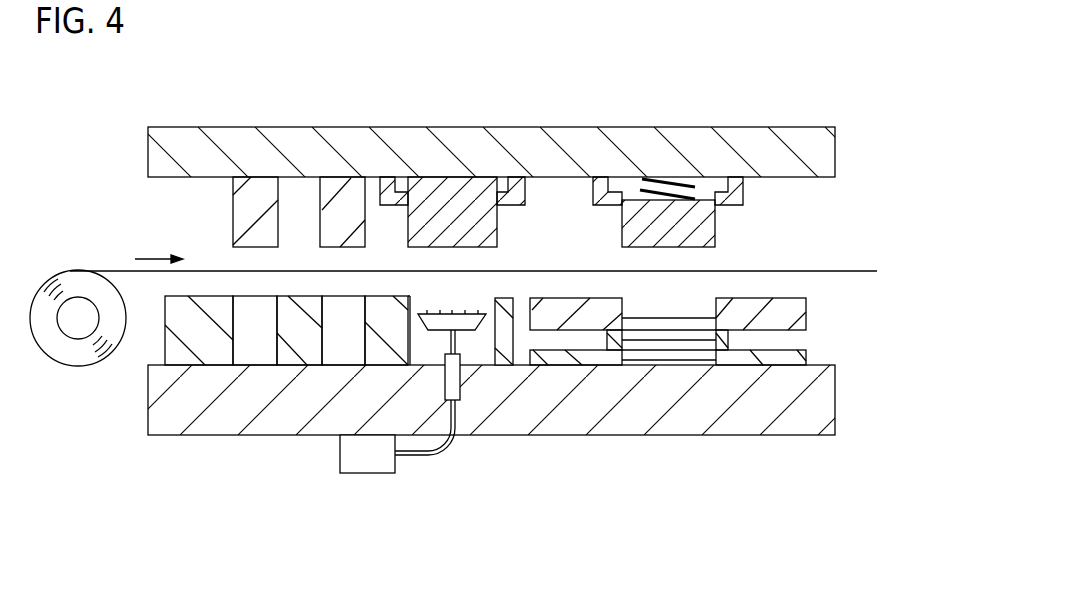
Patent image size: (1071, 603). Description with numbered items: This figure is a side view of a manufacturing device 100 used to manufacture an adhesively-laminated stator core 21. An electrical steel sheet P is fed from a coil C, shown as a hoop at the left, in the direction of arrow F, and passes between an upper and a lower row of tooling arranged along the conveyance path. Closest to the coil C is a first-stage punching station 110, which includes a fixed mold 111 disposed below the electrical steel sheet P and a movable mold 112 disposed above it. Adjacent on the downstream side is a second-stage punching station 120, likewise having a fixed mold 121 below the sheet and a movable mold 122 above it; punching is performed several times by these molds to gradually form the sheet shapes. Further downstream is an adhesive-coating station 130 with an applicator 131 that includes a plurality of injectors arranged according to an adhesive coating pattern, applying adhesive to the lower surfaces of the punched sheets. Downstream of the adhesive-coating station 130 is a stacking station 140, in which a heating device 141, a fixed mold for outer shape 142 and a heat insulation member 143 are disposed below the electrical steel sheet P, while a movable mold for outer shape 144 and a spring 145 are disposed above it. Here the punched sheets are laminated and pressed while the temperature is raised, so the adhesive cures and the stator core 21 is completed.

The manufacturing device 100 is at (890, 165).
The first-stage punching station 110 is at (216, 157).
The fixed mold 111 is at (240, 322).
The movable mold 112 is at (240, 200).
The second-stage punching station 120 is at (416, 168).
The fixed mold 121 is at (325, 330).
The movable mold 122 is at (367, 205).
The adhesive-coating station 130 is at (424, 433).
The applicator 131 is at (478, 325).
The stacking station 140 is at (701, 158).
The heating device 141 is at (733, 338).
The fixed mold for outer shape 142 is at (806, 312).
The heat insulation member 143 is at (565, 362).
The movable mold for outer shape 144 is at (715, 226).
The spring 145 is at (683, 184).
The stator core 21 is at (662, 347).
The electrical steel sheet P is at (115, 270).
The arrow F direction F is at (155, 257).
The coil C is at (50, 357).